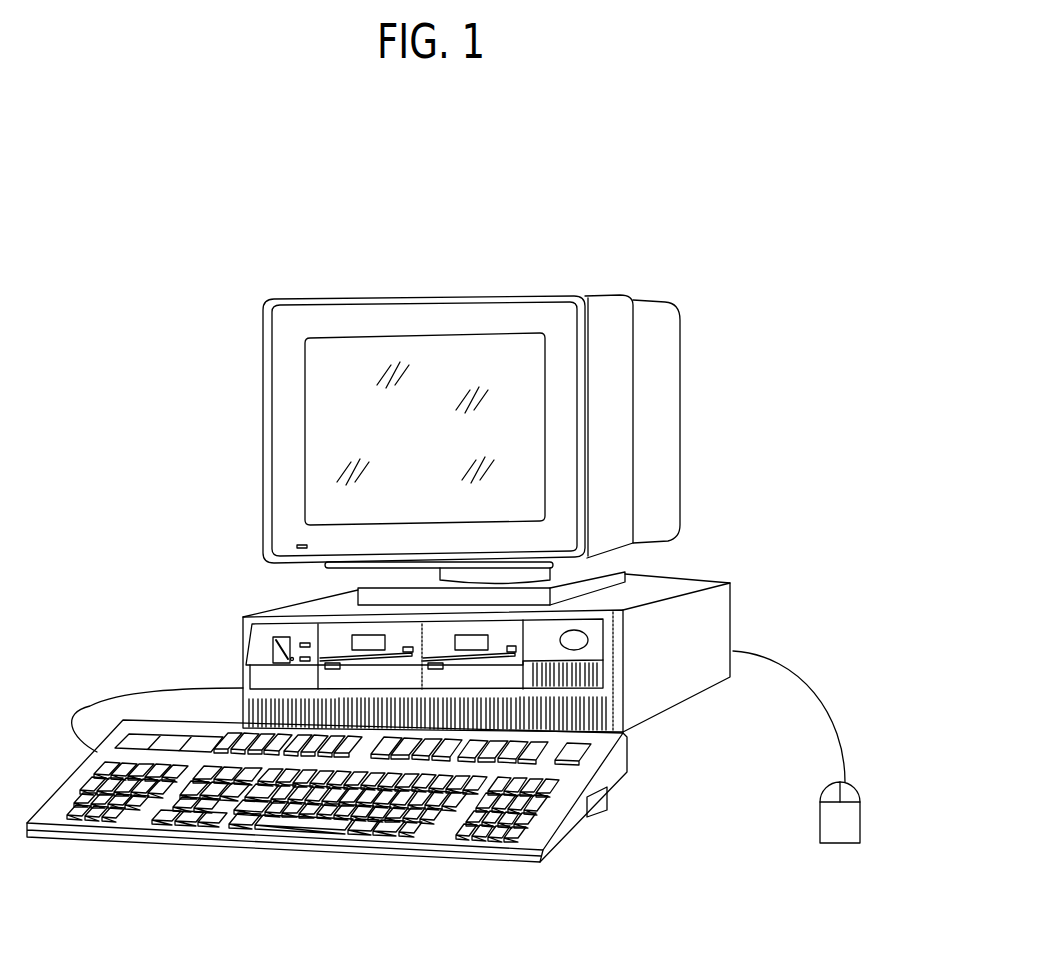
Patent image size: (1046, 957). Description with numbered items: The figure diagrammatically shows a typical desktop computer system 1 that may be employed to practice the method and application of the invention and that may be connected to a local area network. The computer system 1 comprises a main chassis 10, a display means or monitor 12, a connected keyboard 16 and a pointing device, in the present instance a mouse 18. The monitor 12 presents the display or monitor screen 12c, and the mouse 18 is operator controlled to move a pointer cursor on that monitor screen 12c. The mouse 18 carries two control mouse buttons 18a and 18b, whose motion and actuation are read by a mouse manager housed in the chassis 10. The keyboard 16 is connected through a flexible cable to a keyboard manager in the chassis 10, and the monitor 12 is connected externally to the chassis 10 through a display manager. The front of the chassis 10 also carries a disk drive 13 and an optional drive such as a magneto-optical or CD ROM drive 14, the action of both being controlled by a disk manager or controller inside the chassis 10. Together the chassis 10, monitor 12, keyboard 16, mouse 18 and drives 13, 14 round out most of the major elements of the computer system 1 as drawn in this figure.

The computer system 1 is at (630, 236).
The main chassis 10 is at (733, 583).
The monitor 12 is at (681, 358).
The monitor screen 12c is at (337, 420).
The disk drive 13 is at (373, 640).
The CD ROM drive 14 is at (500, 640).
The keyboard 16 is at (467, 860).
The mouse 18 is at (855, 843).
The mouse button 18a is at (827, 795).
The mouse button 18b is at (852, 793).